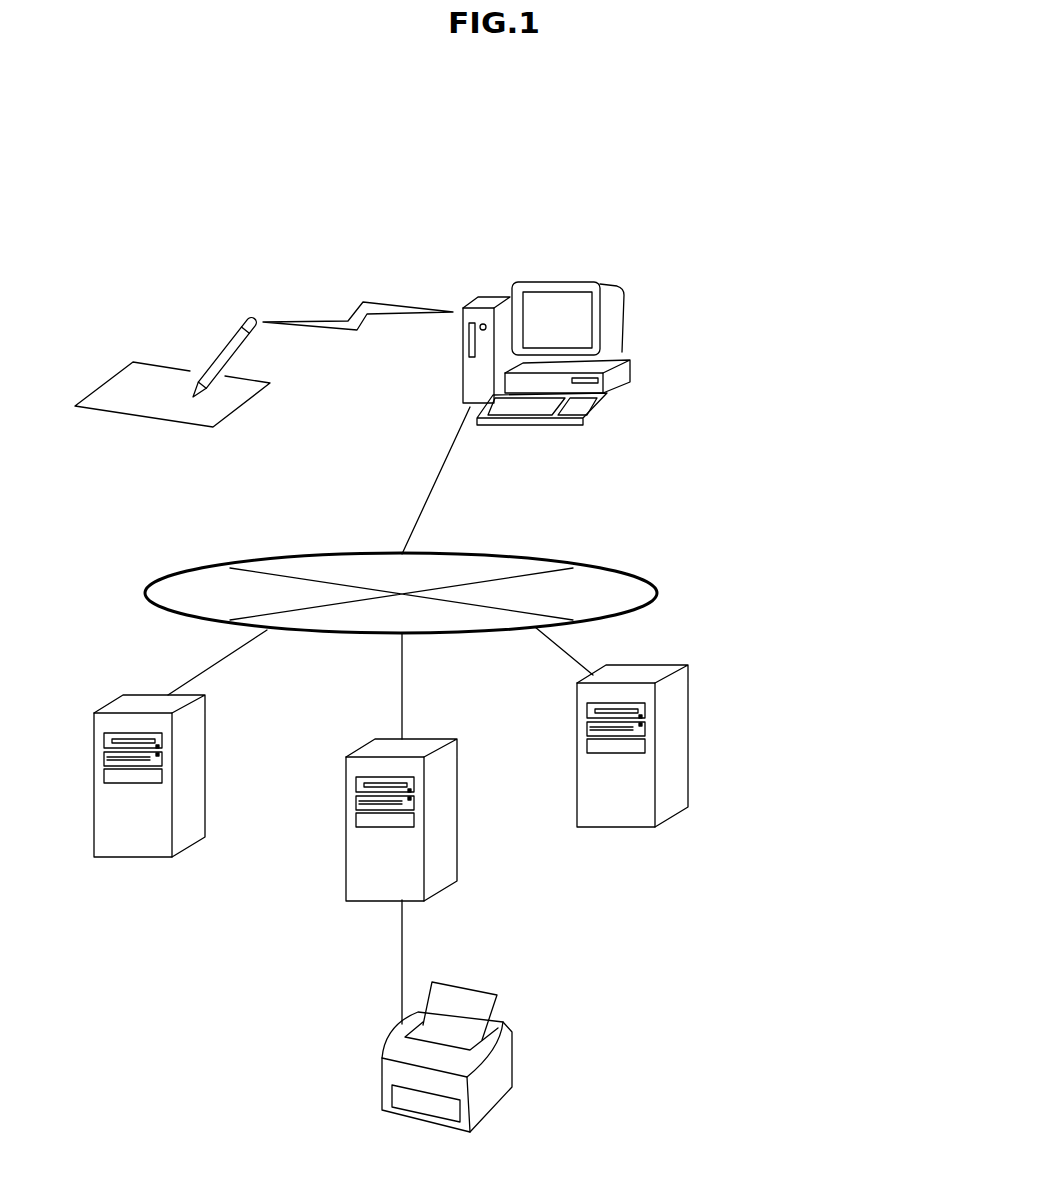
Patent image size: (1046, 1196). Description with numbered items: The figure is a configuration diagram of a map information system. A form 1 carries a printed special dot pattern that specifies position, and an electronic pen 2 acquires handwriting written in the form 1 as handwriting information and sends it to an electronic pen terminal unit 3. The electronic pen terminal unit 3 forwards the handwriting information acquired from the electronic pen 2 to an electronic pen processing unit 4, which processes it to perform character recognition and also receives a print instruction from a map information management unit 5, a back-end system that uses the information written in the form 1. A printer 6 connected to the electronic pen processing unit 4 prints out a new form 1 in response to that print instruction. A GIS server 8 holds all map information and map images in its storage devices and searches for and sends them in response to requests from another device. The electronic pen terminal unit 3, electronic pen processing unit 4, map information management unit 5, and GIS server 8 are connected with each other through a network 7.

The form 1 is at (113, 385).
The electronic pen 2 is at (252, 318).
The electronic pen terminal unit 3 is at (547, 282).
The electronic pen processing unit 4 is at (440, 893).
The map information management unit 5 is at (617, 827).
The printer 6 is at (493, 1103).
The network 7 is at (610, 570).
The GIS server 8 is at (120, 857).